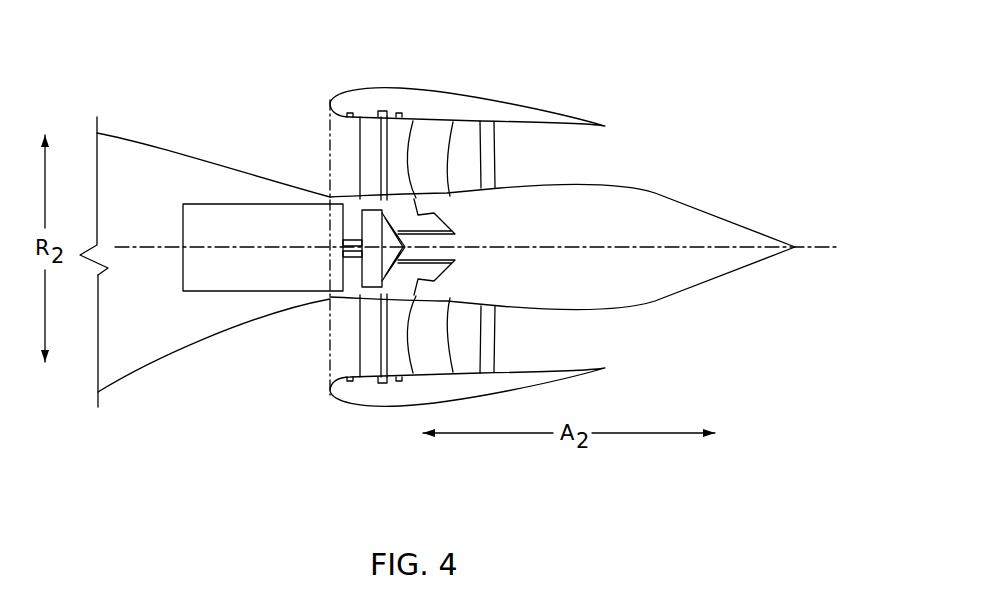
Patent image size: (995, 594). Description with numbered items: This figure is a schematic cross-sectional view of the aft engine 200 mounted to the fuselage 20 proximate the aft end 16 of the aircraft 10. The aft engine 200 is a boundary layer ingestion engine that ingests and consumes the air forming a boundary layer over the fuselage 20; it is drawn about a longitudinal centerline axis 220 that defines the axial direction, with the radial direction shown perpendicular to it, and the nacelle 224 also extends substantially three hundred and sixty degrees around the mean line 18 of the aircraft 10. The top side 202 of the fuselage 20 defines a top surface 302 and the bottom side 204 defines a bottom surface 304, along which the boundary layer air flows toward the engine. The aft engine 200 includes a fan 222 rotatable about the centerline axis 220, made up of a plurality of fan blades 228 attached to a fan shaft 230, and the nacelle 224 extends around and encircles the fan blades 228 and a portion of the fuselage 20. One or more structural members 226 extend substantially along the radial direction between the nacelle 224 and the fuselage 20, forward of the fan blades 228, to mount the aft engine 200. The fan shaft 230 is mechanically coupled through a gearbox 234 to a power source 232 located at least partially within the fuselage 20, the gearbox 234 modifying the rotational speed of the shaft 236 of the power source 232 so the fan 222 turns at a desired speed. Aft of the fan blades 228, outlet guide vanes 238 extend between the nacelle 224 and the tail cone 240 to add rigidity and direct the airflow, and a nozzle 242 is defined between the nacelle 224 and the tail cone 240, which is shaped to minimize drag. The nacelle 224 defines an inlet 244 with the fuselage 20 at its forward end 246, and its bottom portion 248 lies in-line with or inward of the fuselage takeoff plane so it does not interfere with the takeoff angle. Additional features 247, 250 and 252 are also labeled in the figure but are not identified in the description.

The aircraft 10 is at (213, 95).
The aft end 16 is at (727, 165).
The mean line 18 is at (137, 244).
The fuselage 20 is at (140, 143).
The aft engine 200 is at (675, 65).
The top side 202 is at (168, 148).
The bottom side 204 is at (188, 346).
The longitudinal centerline axis 220 is at (822, 240).
The fan 222 is at (435, 138).
The nacelle 224 is at (455, 96).
The structural members 226 is at (358, 130).
The fan blades 228 is at (443, 148).
The fan shaft 230 is at (455, 238).
The power source 232 is at (282, 203).
The gearbox 234 is at (343, 242).
The shaft of the power source 236 is at (360, 288).
The outlet guide vanes 238 is at (497, 340).
The tail cone 240 is at (648, 192).
The nozzle 242 is at (600, 160).
The inlet 244 is at (345, 365).
The forward end 246 is at (285, 430).
The fan plane 247 is at (330, 130).
The bottom portion 248 is at (393, 410).
The nacelle inner surface 250 is at (470, 400).
The exhaust flow 252 is at (618, 360).
The top surface 302 is at (110, 120).
The bottom surface 304 is at (115, 395).